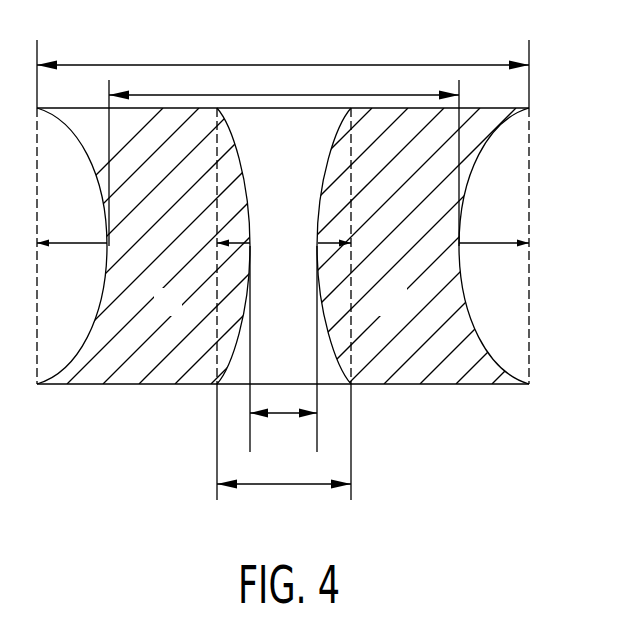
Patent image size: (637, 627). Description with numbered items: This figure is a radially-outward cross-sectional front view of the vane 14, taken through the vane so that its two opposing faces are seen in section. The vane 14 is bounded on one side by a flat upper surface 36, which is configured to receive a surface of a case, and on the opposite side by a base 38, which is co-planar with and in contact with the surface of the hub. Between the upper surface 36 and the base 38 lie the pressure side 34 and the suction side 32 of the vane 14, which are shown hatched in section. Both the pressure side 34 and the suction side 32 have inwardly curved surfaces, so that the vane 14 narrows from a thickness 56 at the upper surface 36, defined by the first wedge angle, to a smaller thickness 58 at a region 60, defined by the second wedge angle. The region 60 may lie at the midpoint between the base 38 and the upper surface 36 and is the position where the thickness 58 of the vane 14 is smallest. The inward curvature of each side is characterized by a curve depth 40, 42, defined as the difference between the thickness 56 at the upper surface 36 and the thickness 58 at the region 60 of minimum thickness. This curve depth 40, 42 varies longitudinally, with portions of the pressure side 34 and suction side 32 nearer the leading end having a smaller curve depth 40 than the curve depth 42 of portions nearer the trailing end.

The vane 14 is at (132, 441).
The suction side 32 is at (178, 313).
The pressure side 34 is at (403, 313).
The upper surface 36 is at (433, 108).
The base 38 is at (450, 385).
The curve depth 40 is at (248, 235).
The curve depth 42 is at (83, 242).
The thickness 56 is at (157, 65).
The thickness 58 is at (268, 96).
The region 60 is at (94, 276).